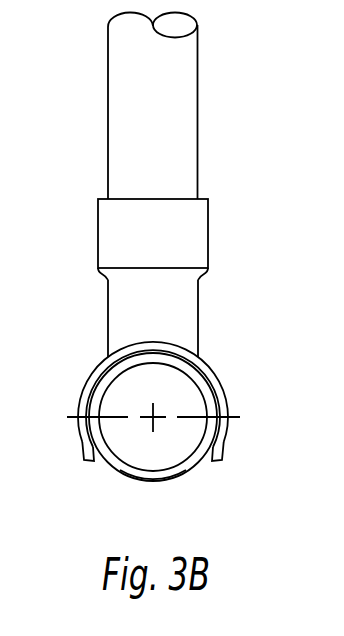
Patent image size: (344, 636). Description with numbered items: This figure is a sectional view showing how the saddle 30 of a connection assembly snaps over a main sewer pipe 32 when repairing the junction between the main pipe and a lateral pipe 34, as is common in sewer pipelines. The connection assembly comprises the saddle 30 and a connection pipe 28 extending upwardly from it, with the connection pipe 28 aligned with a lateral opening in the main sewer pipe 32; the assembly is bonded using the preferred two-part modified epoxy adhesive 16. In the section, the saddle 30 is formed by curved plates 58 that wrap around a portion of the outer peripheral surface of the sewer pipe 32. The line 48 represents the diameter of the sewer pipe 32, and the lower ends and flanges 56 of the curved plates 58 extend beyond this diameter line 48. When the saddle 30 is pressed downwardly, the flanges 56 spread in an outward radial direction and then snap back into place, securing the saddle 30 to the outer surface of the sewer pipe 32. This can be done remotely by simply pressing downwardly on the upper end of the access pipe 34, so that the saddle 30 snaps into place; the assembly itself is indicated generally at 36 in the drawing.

The two-part modified epoxy adhesive 16 is at (194, 366).
The connection pipe 28 is at (190, 237).
The saddle 30 is at (90, 372).
The main pipe 32 is at (178, 476).
The lateral pipe 34 is at (118, 82).
The connector assembly 36 is at (60, 291).
The diameter line 48 is at (236, 417).
The flanges 56 is at (83, 455).
The curved plates 58 is at (80, 400).